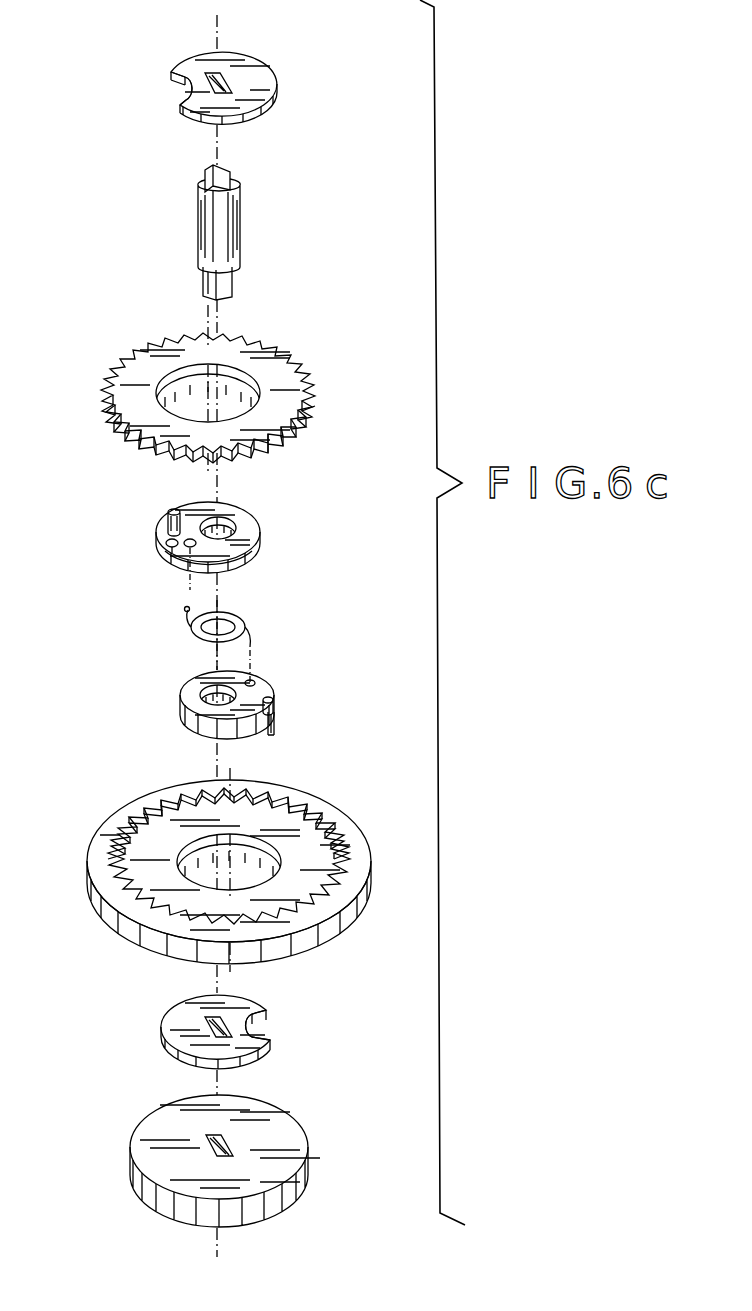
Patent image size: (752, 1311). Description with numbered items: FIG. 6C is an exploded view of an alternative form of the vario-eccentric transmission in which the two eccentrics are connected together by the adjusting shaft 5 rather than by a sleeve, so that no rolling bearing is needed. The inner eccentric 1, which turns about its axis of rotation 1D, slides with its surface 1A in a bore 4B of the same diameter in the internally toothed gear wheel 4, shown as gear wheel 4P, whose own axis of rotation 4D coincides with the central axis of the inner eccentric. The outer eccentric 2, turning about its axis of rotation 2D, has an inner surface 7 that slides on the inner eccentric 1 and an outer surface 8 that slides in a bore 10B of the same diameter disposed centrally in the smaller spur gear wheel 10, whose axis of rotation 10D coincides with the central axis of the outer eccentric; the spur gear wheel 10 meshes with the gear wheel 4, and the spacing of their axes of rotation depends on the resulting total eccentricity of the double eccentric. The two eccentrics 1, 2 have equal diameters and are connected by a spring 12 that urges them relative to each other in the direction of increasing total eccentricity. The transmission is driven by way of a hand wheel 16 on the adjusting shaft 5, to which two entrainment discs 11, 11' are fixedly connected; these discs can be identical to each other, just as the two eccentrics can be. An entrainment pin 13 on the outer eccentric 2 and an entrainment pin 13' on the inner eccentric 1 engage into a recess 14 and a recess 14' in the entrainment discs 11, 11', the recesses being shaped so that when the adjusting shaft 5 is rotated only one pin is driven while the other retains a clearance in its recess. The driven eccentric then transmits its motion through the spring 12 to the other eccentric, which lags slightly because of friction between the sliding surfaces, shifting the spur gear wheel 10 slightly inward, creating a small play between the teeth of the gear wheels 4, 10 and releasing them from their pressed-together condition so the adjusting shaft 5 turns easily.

The recess 14 is at (140, 88).
The entrainment disc 11 is at (253, 88).
The adjusting shaft 5 is at (228, 232).
The spur gear wheel 10 is at (305, 430).
The bore 10B is at (178, 403).
The axis of rotation 10D is at (205, 475).
The axis of rotation 2D is at (219, 482).
The entrainment pin 13 is at (139, 549).
The inner surface 7 is at (236, 525).
The outer eccentric 2 is at (257, 536).
The outer surface 8 is at (256, 568).
The spring 12 is at (246, 622).
The axis of rotation 1D is at (217, 648).
The inner eccentric 1 is at (183, 694).
The surface 1A is at (200, 732).
The entrainment pin 13' is at (302, 728).
The axis of rotation 4D is at (231, 769).
The bore 4B is at (195, 870).
The internally toothed gear wheel 4 is at (323, 818).
The gear wheel 4P is at (350, 870).
The entrainment disc 11' is at (182, 1032).
The recess 14' is at (293, 1026).
The hand wheel 16 is at (147, 1140).